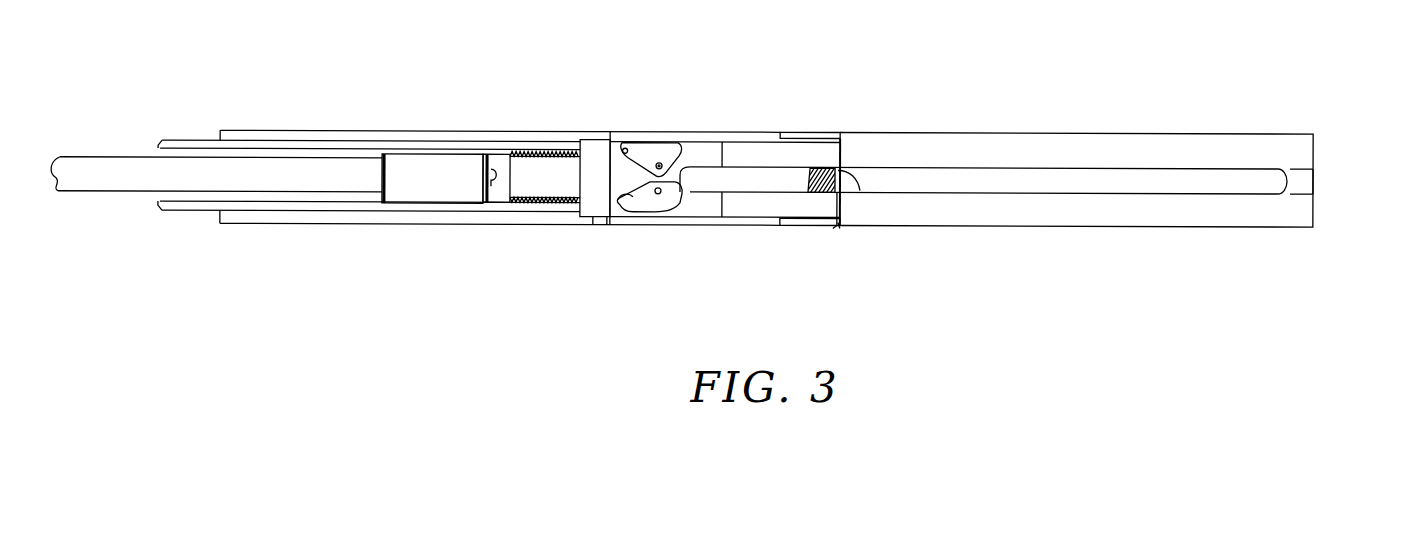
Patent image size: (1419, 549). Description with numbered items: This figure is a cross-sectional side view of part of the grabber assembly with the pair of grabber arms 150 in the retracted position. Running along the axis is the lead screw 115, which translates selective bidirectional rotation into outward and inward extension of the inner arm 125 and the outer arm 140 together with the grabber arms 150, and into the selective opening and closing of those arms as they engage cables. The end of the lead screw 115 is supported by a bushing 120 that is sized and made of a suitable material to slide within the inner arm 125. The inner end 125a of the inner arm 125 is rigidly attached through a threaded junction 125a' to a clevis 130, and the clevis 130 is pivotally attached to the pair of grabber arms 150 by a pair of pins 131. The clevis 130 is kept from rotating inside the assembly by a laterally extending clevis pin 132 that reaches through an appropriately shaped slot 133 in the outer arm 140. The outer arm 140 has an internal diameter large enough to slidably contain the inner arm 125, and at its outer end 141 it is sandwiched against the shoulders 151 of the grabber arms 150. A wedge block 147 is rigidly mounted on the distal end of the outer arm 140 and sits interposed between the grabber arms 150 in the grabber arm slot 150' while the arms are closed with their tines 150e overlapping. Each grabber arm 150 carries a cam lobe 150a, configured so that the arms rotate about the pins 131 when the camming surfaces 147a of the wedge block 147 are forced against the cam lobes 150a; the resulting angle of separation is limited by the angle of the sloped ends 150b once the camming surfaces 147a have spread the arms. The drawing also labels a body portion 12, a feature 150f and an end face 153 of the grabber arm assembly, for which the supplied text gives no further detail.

The housing body 12 is at (283, 129).
The lead screw 115 is at (98, 157).
The bushing 120 is at (438, 170).
The inner arm 125 is at (173, 140).
The inner end 125a is at (539, 95).
The threaded junction 125a' is at (554, 141).
The clevis 130 is at (596, 152).
The pins 131 is at (670, 160).
The clevis pin 132 is at (605, 221).
The slot 133 is at (378, 224).
The outer arm 140 is at (750, 132).
The outer end 141 is at (838, 137).
The wedge block 147 is at (845, 193).
The camming surfaces 147a is at (808, 173).
The grabber arms 150 is at (1077, 181).
The grabber arm slot 150' is at (996, 139).
The cam lobe 150a is at (668, 205).
The sloped ends 150b is at (630, 142).
The tines 150e is at (1320, 191).
The flange 150f is at (845, 172).
The shoulders 151 is at (840, 226).
The end face 153 is at (843, 140).